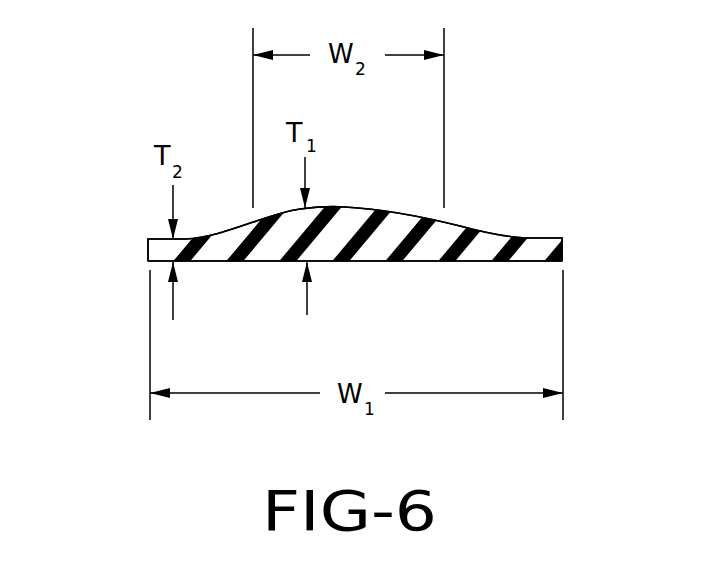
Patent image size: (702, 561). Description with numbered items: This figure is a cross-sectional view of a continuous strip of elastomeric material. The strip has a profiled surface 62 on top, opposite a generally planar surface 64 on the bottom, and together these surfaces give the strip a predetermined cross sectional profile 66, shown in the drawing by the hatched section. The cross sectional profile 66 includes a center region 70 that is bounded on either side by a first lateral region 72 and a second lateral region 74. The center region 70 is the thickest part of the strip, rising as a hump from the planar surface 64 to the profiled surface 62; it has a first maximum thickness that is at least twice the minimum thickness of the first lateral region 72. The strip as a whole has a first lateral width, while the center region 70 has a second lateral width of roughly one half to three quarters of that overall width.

The profiled surface 62 is at (344, 210).
The generally planar surface 64 is at (465, 262).
The cross sectional profile 66 is at (448, 228).
The center region 70 is at (362, 262).
The first lateral region 72 is at (157, 238).
The second lateral region 74 is at (543, 237).